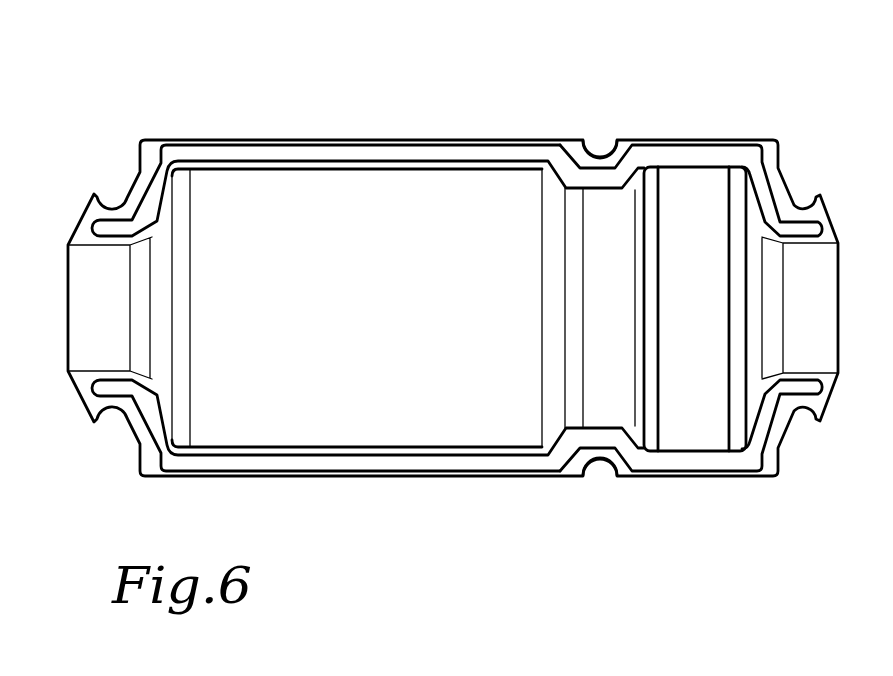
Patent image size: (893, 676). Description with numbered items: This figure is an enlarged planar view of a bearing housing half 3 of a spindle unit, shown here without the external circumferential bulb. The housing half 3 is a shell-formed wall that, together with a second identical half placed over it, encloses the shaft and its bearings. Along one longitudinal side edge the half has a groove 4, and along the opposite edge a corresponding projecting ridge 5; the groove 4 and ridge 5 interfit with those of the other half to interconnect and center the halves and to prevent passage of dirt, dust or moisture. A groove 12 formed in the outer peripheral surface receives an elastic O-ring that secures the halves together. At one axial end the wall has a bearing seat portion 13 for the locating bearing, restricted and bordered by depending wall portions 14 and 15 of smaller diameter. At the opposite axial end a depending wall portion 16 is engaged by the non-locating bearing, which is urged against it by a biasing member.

The bearing housing half 3 is at (160, 98).
The groove 4 is at (360, 153).
The projecting ridge 5 is at (363, 460).
The groove 12 is at (601, 152).
The bearing seat portion 13 is at (686, 181).
The wall portion 14 is at (746, 187).
The wall portion 15 is at (658, 438).
The depending wall portion 16 is at (193, 184).